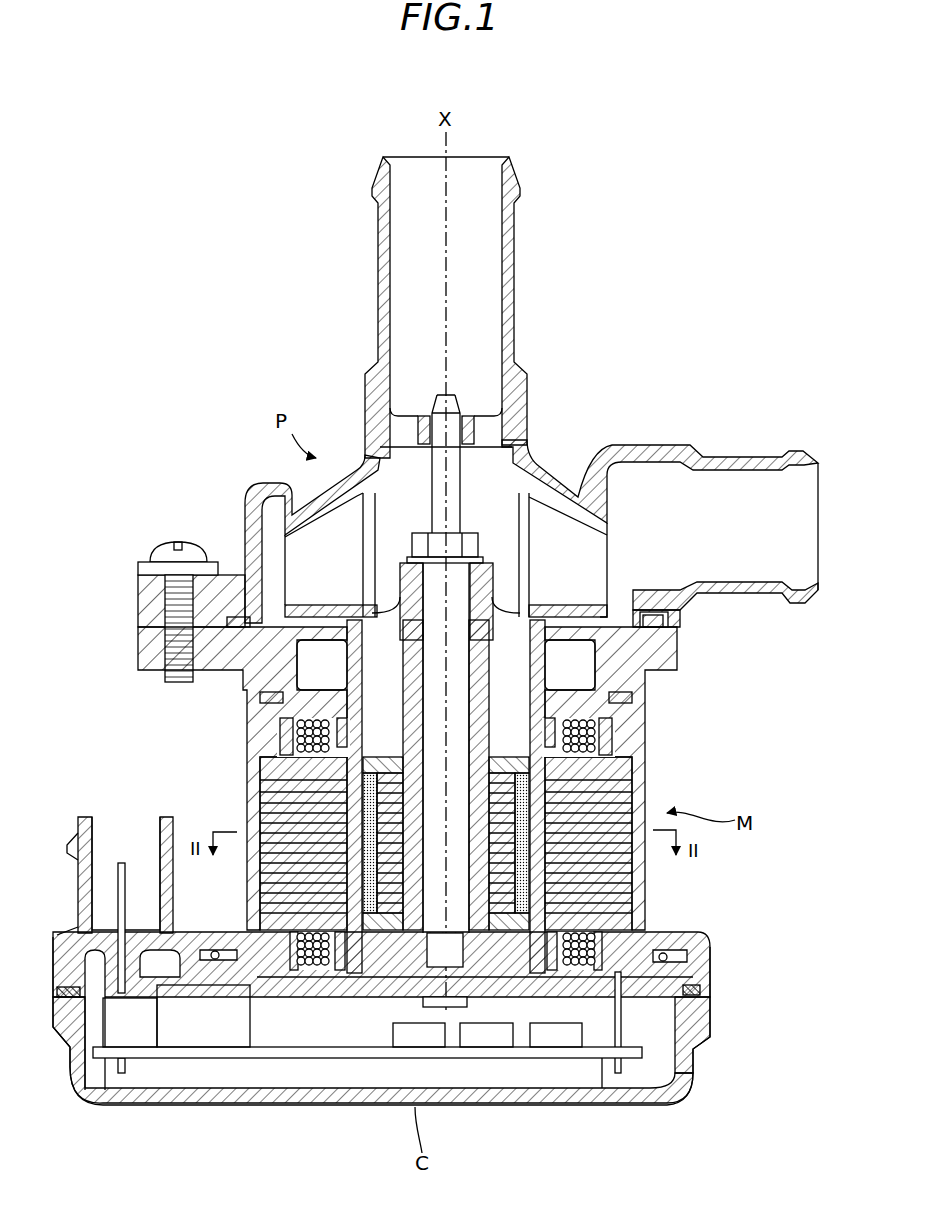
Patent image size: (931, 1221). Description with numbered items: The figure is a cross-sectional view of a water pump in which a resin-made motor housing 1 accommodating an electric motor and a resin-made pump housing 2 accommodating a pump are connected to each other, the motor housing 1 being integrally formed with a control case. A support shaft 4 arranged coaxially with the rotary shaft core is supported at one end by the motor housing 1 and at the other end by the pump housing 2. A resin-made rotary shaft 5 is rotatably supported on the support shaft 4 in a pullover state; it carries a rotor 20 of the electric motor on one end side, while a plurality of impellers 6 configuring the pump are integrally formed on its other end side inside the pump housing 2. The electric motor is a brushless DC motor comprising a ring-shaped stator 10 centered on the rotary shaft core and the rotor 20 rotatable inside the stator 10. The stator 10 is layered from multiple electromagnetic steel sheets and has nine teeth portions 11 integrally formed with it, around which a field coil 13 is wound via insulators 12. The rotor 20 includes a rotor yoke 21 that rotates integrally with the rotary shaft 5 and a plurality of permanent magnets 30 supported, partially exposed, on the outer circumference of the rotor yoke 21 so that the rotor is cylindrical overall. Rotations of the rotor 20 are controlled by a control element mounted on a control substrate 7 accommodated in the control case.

The motor housing 1 is at (247, 800).
The pump housing 2 is at (537, 460).
The support shaft 4 is at (430, 504).
The rotary shaft 5 is at (484, 684).
The impellers 6 is at (290, 543).
The control substrate 7 is at (297, 1062).
The stator 10 is at (489, 844).
The teeth portions 11 is at (617, 873).
The insulators 12 is at (620, 930).
The field coil 13 is at (600, 737).
The rotor 20 is at (435, 856).
The rotor yoke 21 is at (423, 1002).
The permanent magnets 30 is at (520, 777).